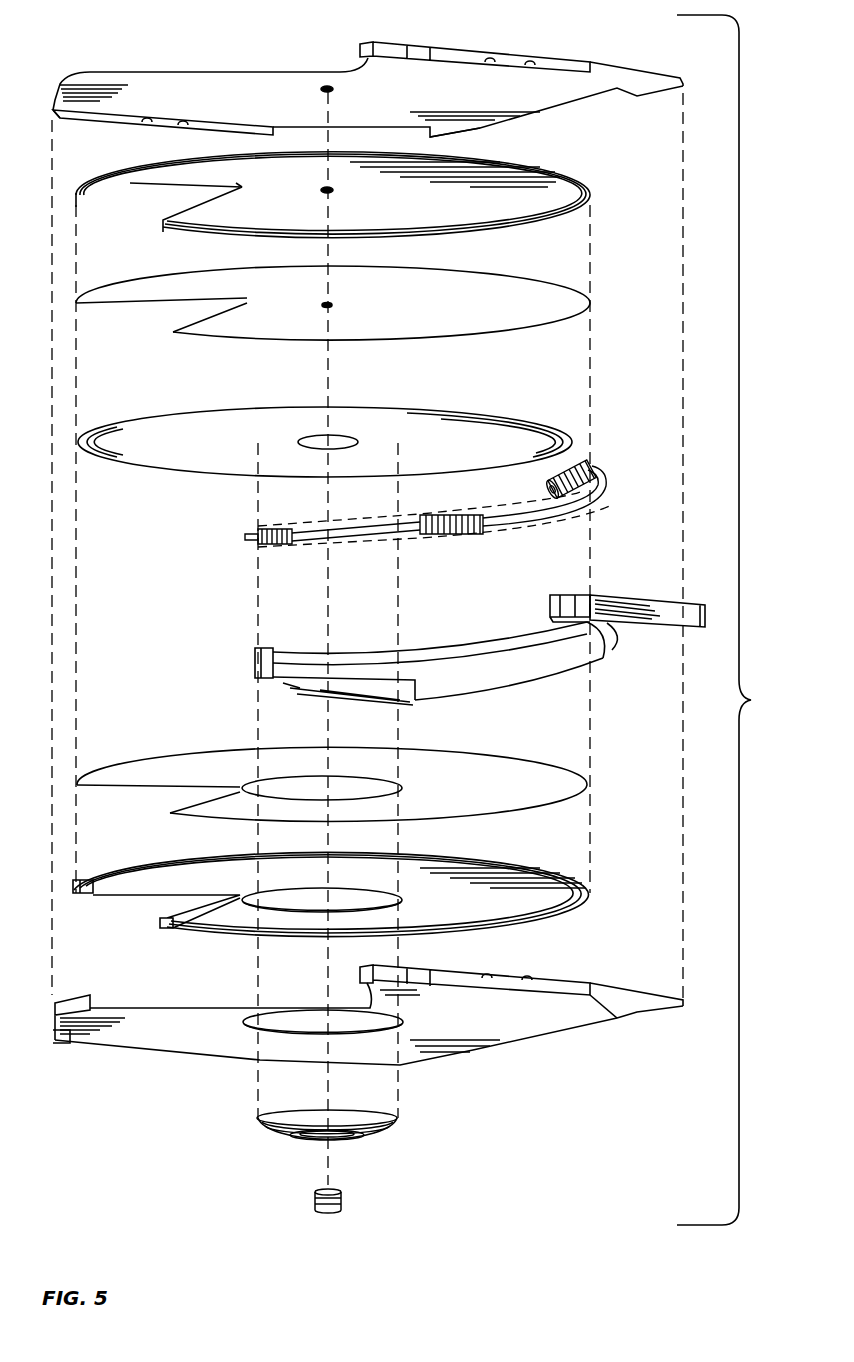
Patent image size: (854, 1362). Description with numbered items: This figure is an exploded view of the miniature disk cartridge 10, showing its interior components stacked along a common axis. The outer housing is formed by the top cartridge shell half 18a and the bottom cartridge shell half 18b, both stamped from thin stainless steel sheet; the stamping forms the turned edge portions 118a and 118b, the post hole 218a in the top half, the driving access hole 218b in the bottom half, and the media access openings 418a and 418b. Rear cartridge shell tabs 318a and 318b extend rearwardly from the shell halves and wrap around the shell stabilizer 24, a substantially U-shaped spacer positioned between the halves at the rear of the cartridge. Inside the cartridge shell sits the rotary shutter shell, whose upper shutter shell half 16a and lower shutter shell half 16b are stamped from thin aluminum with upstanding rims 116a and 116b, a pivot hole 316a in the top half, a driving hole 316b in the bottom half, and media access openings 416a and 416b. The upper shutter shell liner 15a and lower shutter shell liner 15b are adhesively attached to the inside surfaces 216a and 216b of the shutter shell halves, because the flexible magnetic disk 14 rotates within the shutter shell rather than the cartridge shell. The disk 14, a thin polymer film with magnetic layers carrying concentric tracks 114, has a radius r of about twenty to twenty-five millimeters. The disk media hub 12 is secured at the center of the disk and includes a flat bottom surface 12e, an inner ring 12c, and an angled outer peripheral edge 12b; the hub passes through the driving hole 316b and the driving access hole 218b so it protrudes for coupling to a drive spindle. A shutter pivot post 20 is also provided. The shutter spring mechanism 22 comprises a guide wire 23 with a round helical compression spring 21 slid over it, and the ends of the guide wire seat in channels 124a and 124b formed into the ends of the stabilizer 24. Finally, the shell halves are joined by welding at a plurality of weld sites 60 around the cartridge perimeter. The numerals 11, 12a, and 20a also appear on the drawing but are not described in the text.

The miniature disk cartridge 10 is at (751, 700).
The apex of ring notch 11 is at (241, 186).
The disk media hub 12 is at (335, 1119).
The cap top rim 12a is at (318, 1109).
The outer peripheral edge 12b is at (397, 1127).
The inner ring 12c is at (360, 1143).
The flat bottom surface 12e is at (390, 1138).
The flexible magnetic disk 14 is at (325, 438).
The concentric tracks 114 is at (130, 430).
The radius r is at (386, 408).
The upper shutter shell liner 15a is at (168, 288).
The lower shutter shell liner 15b is at (175, 770).
The upper shutter shell half 16a is at (358, 194).
The upstanding rim 116a is at (518, 220).
The inside surface 216a is at (475, 207).
The pivot hole 316a is at (333, 189).
The media access opening 416a is at (164, 198).
The lower shutter shell half 16b is at (330, 887).
The upstanding rim 116b is at (548, 874).
The inside surface 216b is at (500, 855).
The driving hole 316b is at (409, 896).
The media access opening 416b is at (154, 908).
The top cartridge shell half 18a is at (368, 490).
The turned edge portion 118a is at (118, 122).
The post hole 218a is at (334, 89).
The rear cartridge shell tab 318a is at (638, 77).
The media access opening 418a is at (272, 58).
The bottom cartridge shell half 18b is at (368, 1021).
The turned edge portion 118b is at (587, 983).
The driving access hole 218b is at (408, 1013).
The rear cartridge shell tab 318b is at (638, 1013).
The media access opening 418b is at (244, 988).
The shutter pivot post 20 is at (334, 1210).
The fastener head 20a is at (325, 1188).
The helical compression spring 21 is at (460, 533).
The shutter spring mechanism 22 is at (600, 484).
The guide wire 23 is at (445, 497).
The shell stabilizer 24 is at (480, 635).
The channel 124a is at (264, 648).
The channel 124b is at (557, 595).
The weld sites 60 is at (183, 125).